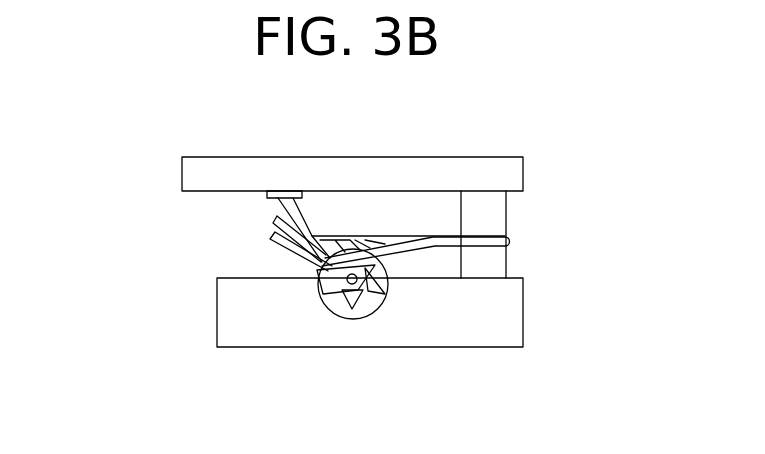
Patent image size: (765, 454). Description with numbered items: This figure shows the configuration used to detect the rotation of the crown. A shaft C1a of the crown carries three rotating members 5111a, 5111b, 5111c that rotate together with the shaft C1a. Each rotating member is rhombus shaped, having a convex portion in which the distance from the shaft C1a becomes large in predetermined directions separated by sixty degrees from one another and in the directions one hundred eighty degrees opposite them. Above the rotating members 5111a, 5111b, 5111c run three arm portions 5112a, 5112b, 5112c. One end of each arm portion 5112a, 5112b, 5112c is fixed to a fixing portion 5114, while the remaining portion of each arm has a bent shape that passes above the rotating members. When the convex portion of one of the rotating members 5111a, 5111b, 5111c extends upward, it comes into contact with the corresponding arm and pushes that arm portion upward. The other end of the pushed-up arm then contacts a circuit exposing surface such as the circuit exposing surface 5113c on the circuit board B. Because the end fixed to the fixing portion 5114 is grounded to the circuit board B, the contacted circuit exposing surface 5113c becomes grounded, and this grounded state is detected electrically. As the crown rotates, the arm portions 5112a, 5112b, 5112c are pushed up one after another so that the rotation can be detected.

The circuit board B is at (397, 172).
The circuit exposing surface 5113c is at (281, 197).
The arm portion 5112b is at (283, 205).
The arm portion 5112a is at (273, 227).
The arm portion 5112c is at (273, 245).
The fixing portion 5114 is at (492, 217).
The shaft C1a is at (347, 281).
The rotating member 5111c is at (333, 293).
The rotating member 5111b is at (352, 300).
The rotating member 5111a is at (372, 288).